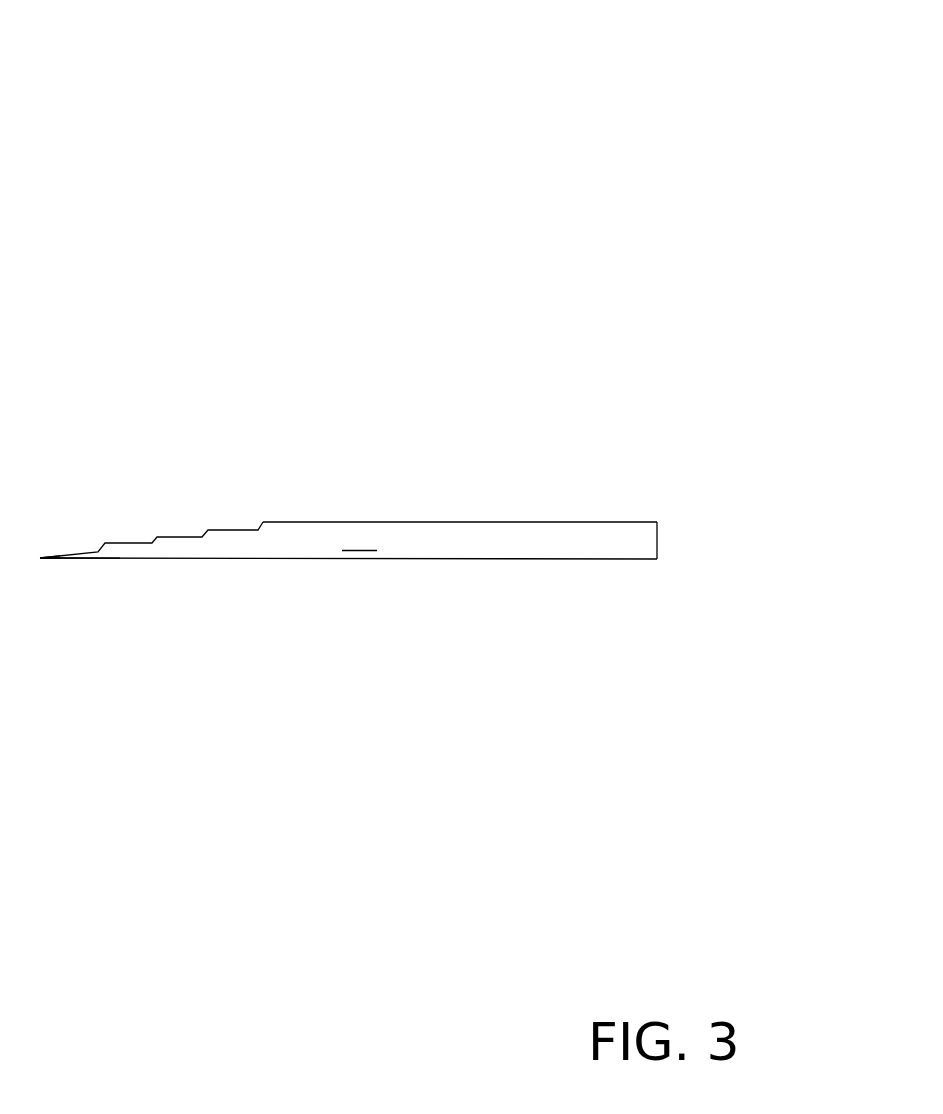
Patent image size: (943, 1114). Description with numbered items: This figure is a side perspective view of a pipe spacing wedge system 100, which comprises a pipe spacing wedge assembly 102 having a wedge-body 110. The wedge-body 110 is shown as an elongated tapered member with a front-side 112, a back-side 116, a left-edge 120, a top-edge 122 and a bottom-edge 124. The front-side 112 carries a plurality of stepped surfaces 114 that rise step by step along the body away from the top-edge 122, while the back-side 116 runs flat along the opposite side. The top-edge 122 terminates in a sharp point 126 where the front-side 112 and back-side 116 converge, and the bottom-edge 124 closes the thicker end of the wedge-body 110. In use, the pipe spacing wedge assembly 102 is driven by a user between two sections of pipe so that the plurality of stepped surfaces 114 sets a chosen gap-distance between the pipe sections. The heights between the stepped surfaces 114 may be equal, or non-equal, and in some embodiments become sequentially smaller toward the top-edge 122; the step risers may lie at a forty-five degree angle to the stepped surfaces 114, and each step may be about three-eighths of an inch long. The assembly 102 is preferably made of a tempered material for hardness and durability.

The pipe spacing wedge system 100 is at (477, 98).
The pipe spacing wedge assembly 102 is at (512, 128).
The wedge-body 110 is at (553, 160).
The front-side 112 is at (447, 522).
The plurality of stepped surfaces 114 is at (187, 502).
The back-side 116 is at (382, 575).
The left-edge 120 is at (377, 550).
The top-edge 122 is at (40, 553).
The bottom-edge 124 is at (657, 543).
The sharp point 126 is at (40, 560).